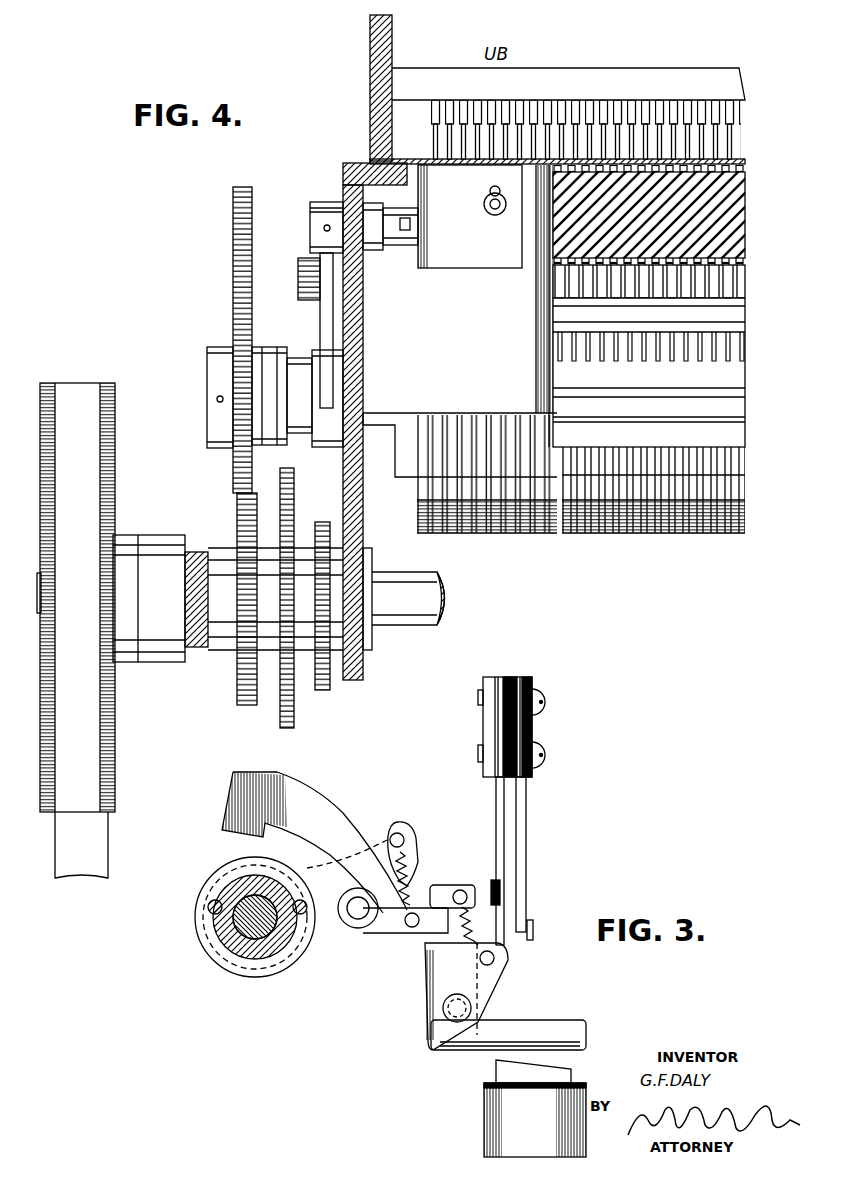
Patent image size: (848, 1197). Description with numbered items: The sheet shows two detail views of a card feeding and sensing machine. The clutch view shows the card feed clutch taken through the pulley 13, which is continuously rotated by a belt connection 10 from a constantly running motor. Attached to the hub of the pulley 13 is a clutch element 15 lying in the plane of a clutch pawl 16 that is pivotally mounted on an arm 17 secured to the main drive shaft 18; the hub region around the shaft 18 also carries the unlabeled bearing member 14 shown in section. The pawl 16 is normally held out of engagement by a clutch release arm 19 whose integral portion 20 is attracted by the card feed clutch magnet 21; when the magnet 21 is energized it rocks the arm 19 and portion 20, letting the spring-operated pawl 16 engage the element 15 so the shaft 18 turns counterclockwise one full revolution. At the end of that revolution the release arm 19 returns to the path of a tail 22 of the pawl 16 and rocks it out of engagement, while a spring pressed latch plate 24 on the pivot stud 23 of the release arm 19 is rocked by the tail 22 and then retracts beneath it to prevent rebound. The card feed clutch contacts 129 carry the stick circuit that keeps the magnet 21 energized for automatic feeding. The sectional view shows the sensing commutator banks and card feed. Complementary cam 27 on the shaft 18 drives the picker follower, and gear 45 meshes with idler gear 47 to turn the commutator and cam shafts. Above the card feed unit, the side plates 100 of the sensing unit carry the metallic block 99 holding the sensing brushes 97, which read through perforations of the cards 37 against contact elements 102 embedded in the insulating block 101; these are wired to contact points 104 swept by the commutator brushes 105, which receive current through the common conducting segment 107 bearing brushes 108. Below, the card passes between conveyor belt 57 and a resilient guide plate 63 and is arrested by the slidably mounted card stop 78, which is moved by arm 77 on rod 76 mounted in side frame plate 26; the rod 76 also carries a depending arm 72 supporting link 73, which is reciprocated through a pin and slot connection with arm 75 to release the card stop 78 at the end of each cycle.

In FIG. 4, the side plate 100 is at (370, 68).
In FIG. 4, the resilient guide plate 63 is at (372, 158).
In FIG. 4, the metallic block 99 is at (652, 76).
In FIG. 4, the sensing brush 97 is at (565, 135).
In FIG. 4, the contact element 102 is at (735, 172).
In FIG. 4, the block of insulating material 101 is at (722, 212).
In FIG. 4, the contact point 104 is at (695, 260).
In FIG. 4, the brush 105 is at (725, 284).
In FIG. 4, the brush 108 is at (735, 490).
In FIG. 4, the common conducting segment 107 is at (735, 535).
In FIG. 4, the card stop 78 is at (470, 216).
In FIG. 4, the card 37 is at (536, 167).
In FIG. 4, the rod 76 is at (395, 210).
In FIG. 4, the arm 77 is at (412, 231).
In FIG. 4, the conveyor belt 57 is at (343, 177).
In FIG. 4, the side frame plate 26 is at (363, 327).
In FIG. 4, the depending arm 72 is at (315, 252).
In FIG. 4, the link 73 is at (298, 280).
In FIG. 4, the arm 75 is at (320, 323).
In FIG. 4, the idler gear 47 is at (207, 412).
In FIG. 4, the gear 45 is at (240, 666).
In FIG. 4, the complementary cam 27 is at (295, 706).
In FIG. 4, the main drive shaft 18 is at (413, 608).
In FIG. 3, the main drive shaft 18 is at (250, 910).
In FIG. 4, the pulley 13 is at (113, 707).
In FIG. 4, the belt connection 10 is at (90, 830).
In FIG. 3, the clutch element 15 is at (257, 970).
In FIG. 3, the bearing 14 is at (237, 920).
In FIG. 3, the clutch pawl 16 is at (295, 788).
In FIG. 3, the arm 17 is at (380, 840).
In FIG. 3, the tail 22 is at (433, 920).
In FIG. 3, the clutch release arm 19 is at (448, 883).
In FIG. 3, the latch plate 24 is at (445, 978).
In FIG. 3, the pivot stud 23 is at (450, 1013).
In FIG. 3, the integral portion 20 is at (521, 1030).
In FIG. 3, the card feed clutch magnet 21 is at (506, 1119).
In FIG. 3, the card feed clutch contacts 129 is at (536, 903).